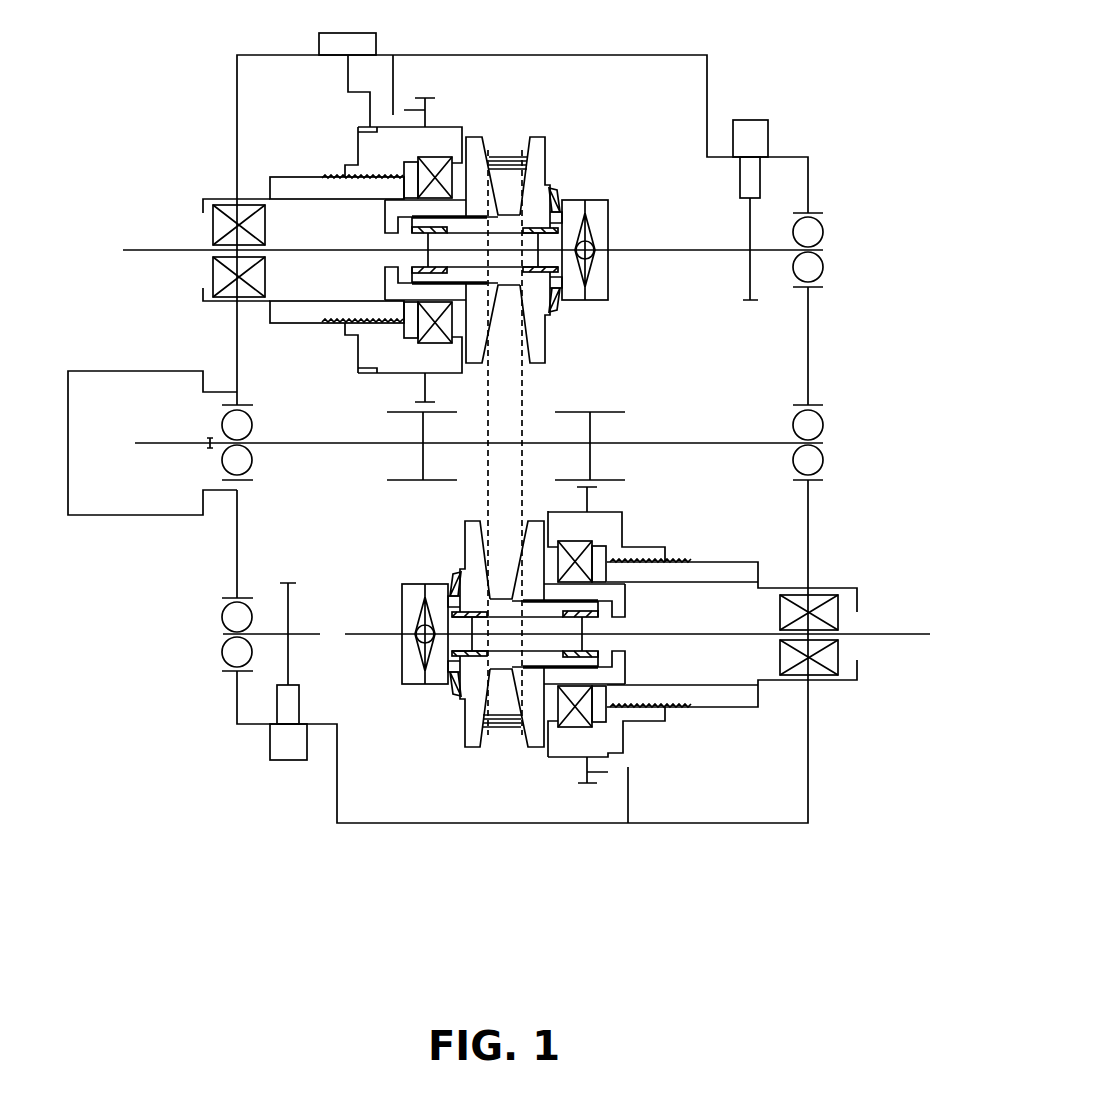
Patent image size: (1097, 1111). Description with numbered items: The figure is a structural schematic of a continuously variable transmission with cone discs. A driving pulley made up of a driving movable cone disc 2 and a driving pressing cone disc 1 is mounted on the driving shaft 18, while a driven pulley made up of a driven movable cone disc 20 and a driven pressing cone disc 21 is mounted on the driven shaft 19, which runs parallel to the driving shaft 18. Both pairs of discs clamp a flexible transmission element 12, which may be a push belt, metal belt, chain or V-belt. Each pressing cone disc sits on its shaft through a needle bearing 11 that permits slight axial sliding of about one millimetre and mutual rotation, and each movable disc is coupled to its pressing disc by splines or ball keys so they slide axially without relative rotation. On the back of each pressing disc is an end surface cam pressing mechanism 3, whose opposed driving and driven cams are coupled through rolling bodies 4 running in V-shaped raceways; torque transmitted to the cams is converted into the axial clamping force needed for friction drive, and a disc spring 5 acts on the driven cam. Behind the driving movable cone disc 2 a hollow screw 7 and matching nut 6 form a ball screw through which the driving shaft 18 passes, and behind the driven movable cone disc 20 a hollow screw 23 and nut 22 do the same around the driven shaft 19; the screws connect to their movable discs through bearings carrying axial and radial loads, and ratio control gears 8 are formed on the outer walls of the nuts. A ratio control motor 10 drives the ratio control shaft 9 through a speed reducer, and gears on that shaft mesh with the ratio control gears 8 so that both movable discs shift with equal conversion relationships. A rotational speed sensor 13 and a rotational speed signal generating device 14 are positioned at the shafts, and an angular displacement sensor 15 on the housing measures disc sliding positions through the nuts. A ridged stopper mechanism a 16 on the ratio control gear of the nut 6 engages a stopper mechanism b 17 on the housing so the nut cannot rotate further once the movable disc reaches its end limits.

The driving pressing cone disc 1 is at (534, 163).
The driving movable cone disc 2 is at (444, 226).
The end surface cam pressing mechanism 3 is at (590, 206).
The rolling bodies 4 is at (597, 250).
The disc spring 5 is at (561, 196).
The nut 6 is at (424, 143).
The hollow screw 7 is at (308, 188).
The ratio control gears 8 is at (428, 97).
The ratio control shaft 9 is at (740, 443).
The ratio control motor 10 is at (120, 490).
The needle bearing 11 is at (482, 167).
The flexible transmission element 12 is at (513, 157).
The rotational speed sensor 13 is at (748, 145).
The rotational speed signal generating device 14 is at (750, 215).
The angular displacement sensor 15 is at (337, 47).
The stopper mechanism a 16 is at (388, 90).
The stopper mechanism b 17 is at (405, 108).
The driving shaft 18 is at (770, 248).
The driven shaft 19 is at (753, 633).
The driven movable cone disc 20 is at (522, 748).
The driven pressing cone disc 21 is at (472, 750).
The nut 22 is at (627, 712).
The hollow screw 23 is at (683, 700).